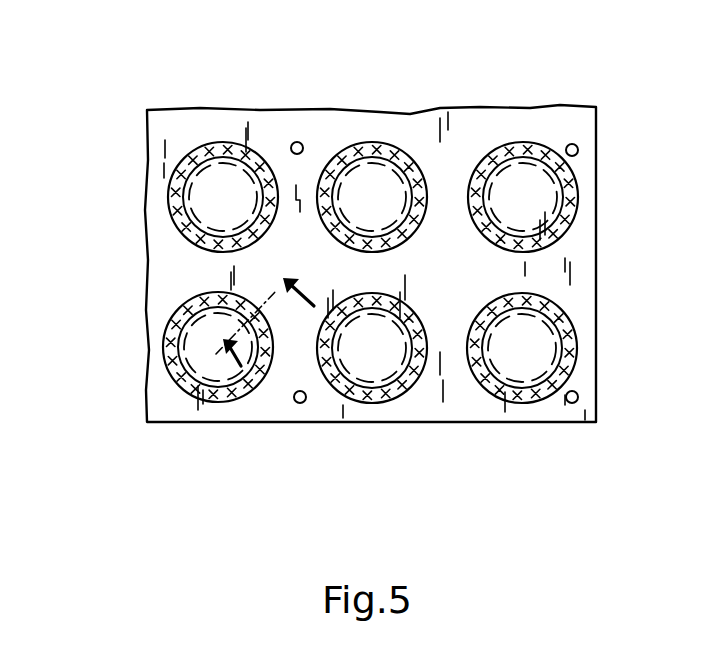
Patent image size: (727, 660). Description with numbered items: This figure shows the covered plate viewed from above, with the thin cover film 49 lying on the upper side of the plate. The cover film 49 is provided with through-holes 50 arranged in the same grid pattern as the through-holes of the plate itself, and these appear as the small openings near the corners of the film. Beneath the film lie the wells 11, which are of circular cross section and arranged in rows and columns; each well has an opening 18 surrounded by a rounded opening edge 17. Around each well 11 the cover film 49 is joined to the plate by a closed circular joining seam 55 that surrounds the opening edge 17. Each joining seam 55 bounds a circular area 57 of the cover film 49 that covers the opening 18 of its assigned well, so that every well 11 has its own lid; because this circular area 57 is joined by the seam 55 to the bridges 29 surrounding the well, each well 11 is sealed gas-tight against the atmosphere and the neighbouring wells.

The cover film 49 is at (470, 130).
The through-holes 50 is at (578, 148).
The circular area 57 is at (213, 193).
The joining seam 55 is at (178, 236).
The bridges 29 is at (523, 272).
The opening 18 is at (522, 338).
The opening edge 17 is at (557, 348).
The wells 11 is at (372, 345).